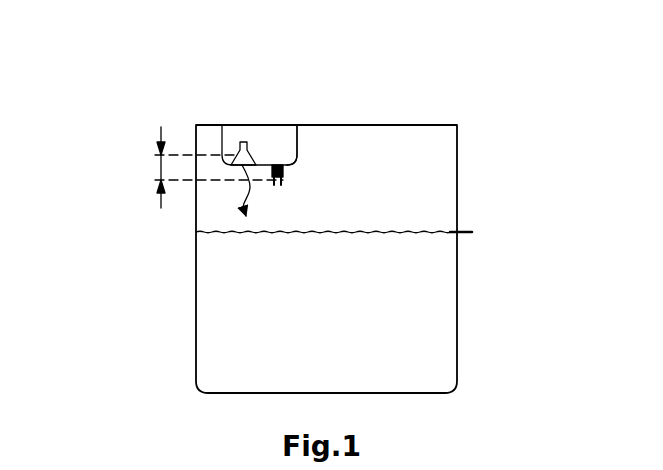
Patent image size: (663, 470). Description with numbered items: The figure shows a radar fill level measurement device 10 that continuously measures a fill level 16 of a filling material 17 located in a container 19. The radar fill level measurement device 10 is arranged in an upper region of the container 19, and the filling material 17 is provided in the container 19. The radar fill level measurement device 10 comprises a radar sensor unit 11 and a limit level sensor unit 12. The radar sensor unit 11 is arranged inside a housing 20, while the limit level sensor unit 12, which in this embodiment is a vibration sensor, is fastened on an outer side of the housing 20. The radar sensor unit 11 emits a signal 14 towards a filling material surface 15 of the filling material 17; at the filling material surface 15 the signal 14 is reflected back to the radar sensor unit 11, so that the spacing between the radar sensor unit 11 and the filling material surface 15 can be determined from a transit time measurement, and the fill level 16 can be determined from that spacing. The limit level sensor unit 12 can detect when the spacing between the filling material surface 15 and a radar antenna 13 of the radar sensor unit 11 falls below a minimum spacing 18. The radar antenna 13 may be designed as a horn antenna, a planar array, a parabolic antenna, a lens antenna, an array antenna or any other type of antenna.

The radar fill level measurement device 10 is at (252, 121).
The radar sensor unit 11 is at (258, 143).
The limit level sensor unit 12 is at (283, 172).
The radar antenna 13 is at (241, 153).
The signal 14 is at (247, 200).
The filling material surface 15 is at (393, 231).
The fill level 16 is at (476, 232).
The filling material 17 is at (421, 312).
The minimum spacing 18 is at (160, 172).
The container 19 is at (196, 305).
The housing 20 is at (298, 143).